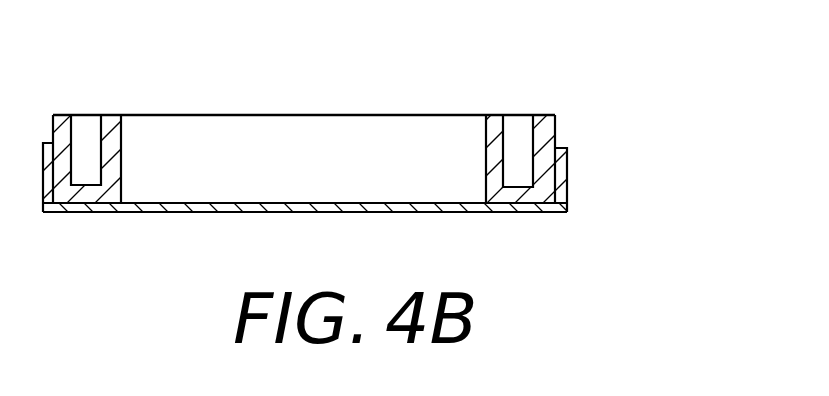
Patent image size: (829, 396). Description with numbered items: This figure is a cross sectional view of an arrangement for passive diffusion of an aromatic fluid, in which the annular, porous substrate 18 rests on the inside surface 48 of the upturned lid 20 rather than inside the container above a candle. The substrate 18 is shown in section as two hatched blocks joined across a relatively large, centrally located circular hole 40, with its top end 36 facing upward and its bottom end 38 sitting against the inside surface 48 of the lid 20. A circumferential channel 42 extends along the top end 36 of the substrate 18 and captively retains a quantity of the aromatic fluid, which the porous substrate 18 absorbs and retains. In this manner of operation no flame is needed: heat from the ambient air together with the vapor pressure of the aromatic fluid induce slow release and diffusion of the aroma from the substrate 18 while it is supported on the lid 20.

The annular porous substrate 18 is at (560, 137).
The lid 20 is at (568, 194).
The top end 36 is at (200, 114).
The bottom end 38 is at (72, 203).
The centrally located circular hole 40 is at (392, 138).
The circumferential channel 42 is at (513, 137).
The inside surface 48 is at (299, 204).